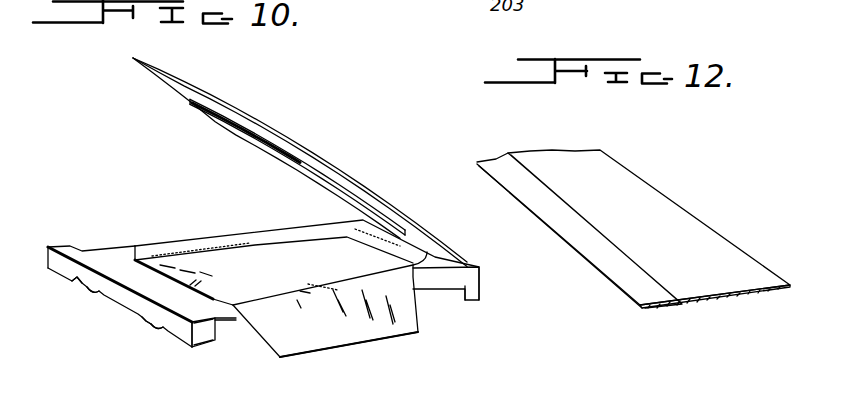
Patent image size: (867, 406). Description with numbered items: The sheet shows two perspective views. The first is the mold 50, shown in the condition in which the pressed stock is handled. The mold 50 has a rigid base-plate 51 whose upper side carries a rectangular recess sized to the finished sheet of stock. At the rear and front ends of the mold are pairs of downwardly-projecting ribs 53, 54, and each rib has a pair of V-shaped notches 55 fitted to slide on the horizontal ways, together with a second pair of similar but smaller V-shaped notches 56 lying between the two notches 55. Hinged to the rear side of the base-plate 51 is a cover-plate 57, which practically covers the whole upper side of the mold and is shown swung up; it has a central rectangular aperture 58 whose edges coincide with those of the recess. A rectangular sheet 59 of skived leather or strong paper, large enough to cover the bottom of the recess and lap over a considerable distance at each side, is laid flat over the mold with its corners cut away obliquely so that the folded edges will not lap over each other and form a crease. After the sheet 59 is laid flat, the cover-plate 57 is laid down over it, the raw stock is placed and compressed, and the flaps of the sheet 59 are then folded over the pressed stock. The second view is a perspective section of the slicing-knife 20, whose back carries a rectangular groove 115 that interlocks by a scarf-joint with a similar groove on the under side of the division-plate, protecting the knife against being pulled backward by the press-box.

In FIG. 10, the mold 50 is at (118, 246).
In FIG. 10, the base-plate 51 is at (231, 321).
In FIG. 10, the rear downwardly-projecting rib 53 is at (479, 297).
In FIG. 10, the front downwardly-projecting rib 54 is at (197, 344).
In FIG. 10, the V-shaped notches 55 is at (77, 280).
In FIG. 10, the smaller V-shaped notches 56 is at (94, 292).
In FIG. 10, the cover-plate 57 is at (341, 173).
In FIG. 10, the central rectangular aperture 58 is at (285, 150).
In FIG. 10, the sheet of skived leather or strong paper 59 is at (327, 332).
In FIG. 12, the sheet 20 is at (670, 217).
In FIG. 12, the rectangular groove 115 is at (653, 306).